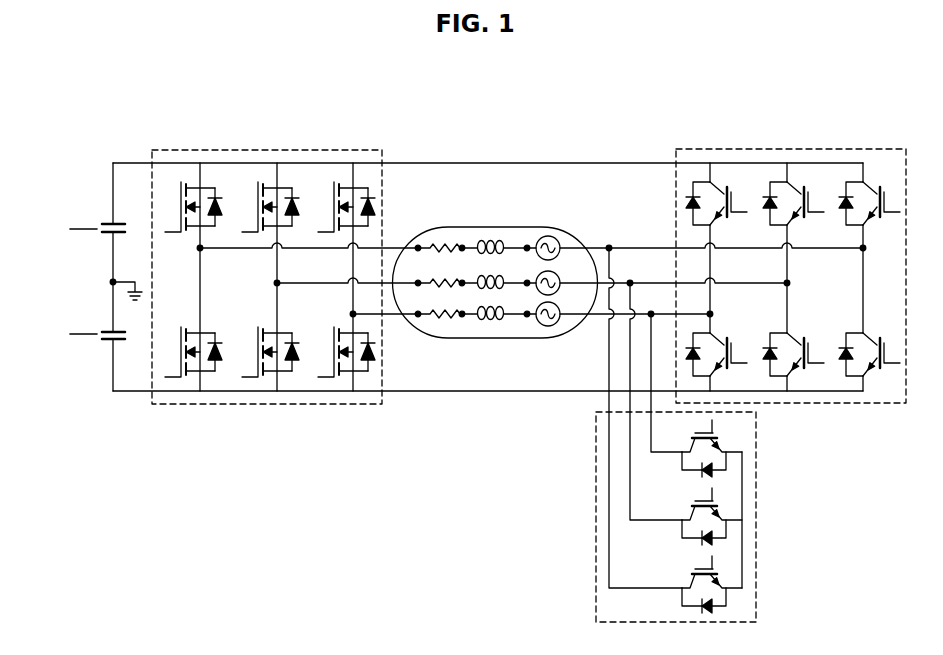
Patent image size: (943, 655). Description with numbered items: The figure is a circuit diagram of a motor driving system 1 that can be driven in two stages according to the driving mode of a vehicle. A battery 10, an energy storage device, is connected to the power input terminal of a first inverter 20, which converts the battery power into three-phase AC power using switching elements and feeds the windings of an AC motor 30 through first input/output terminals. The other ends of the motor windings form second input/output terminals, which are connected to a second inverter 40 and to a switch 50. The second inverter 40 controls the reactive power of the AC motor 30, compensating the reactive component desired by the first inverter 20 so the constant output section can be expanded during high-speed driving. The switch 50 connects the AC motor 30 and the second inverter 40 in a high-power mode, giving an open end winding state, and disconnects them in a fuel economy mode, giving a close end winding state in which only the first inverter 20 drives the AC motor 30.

The motor driving system 1 is at (892, 97).
The battery 10 is at (102, 213).
The first inverter 20 is at (262, 148).
The AC motor 30 is at (493, 227).
The second inverter 40 is at (791, 148).
The switch 50 is at (757, 507).